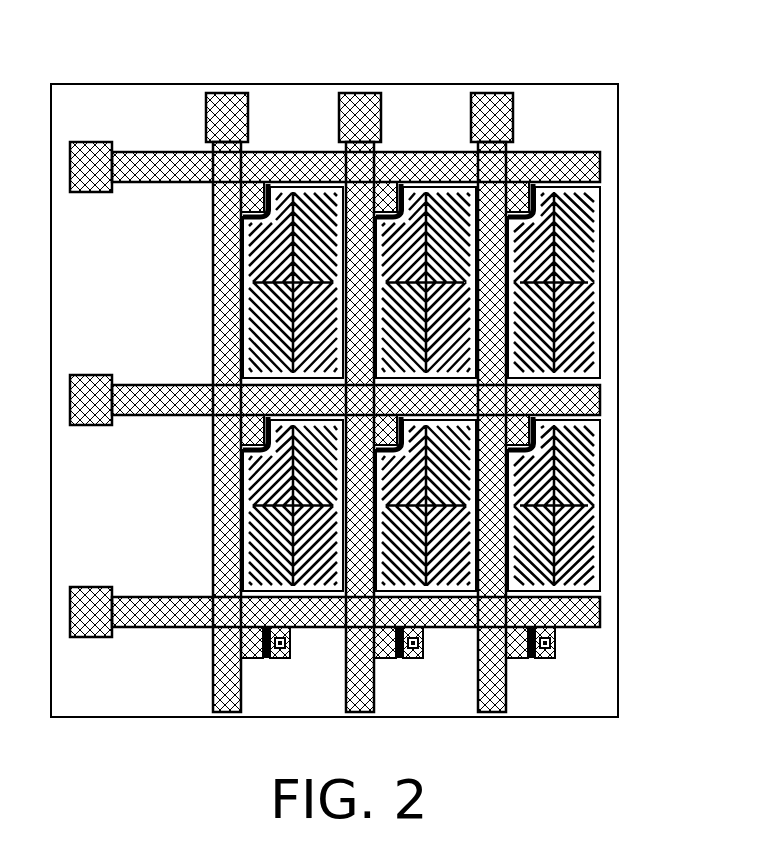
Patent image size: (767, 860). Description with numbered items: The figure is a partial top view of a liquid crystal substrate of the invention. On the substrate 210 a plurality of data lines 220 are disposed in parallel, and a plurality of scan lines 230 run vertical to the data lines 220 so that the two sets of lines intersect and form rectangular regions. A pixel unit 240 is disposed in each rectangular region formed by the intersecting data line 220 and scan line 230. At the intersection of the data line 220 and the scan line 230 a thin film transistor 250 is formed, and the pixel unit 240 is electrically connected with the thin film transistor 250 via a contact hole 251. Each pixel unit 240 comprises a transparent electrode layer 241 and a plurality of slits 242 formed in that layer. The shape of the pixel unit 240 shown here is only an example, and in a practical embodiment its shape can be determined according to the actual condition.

The substrate 210 is at (610, 327).
The data lines 220 is at (513, 113).
The scan lines 230 is at (600, 168).
The pixel unit 240 is at (600, 247).
The transparent electrode layer 241 is at (603, 430).
The slits 242 is at (593, 485).
The thin film transistor 250 is at (553, 657).
The contact hole 251 is at (557, 628).